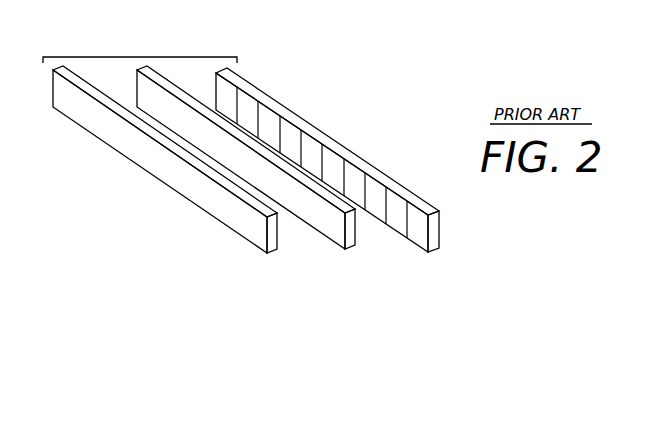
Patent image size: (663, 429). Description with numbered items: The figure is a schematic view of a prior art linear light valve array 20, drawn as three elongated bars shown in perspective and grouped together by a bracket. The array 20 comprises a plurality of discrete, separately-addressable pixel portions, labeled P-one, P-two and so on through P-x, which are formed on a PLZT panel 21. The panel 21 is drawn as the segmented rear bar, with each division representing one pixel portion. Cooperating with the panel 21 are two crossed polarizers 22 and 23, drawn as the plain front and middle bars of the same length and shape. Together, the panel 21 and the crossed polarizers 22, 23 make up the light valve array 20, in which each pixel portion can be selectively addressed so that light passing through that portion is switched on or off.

The linear light valve array 20 is at (140, 57).
The PLZT panel 21 is at (349, 247).
The crossed polarizer 22 is at (270, 251).
The crossed polarizer 23 is at (433, 246).